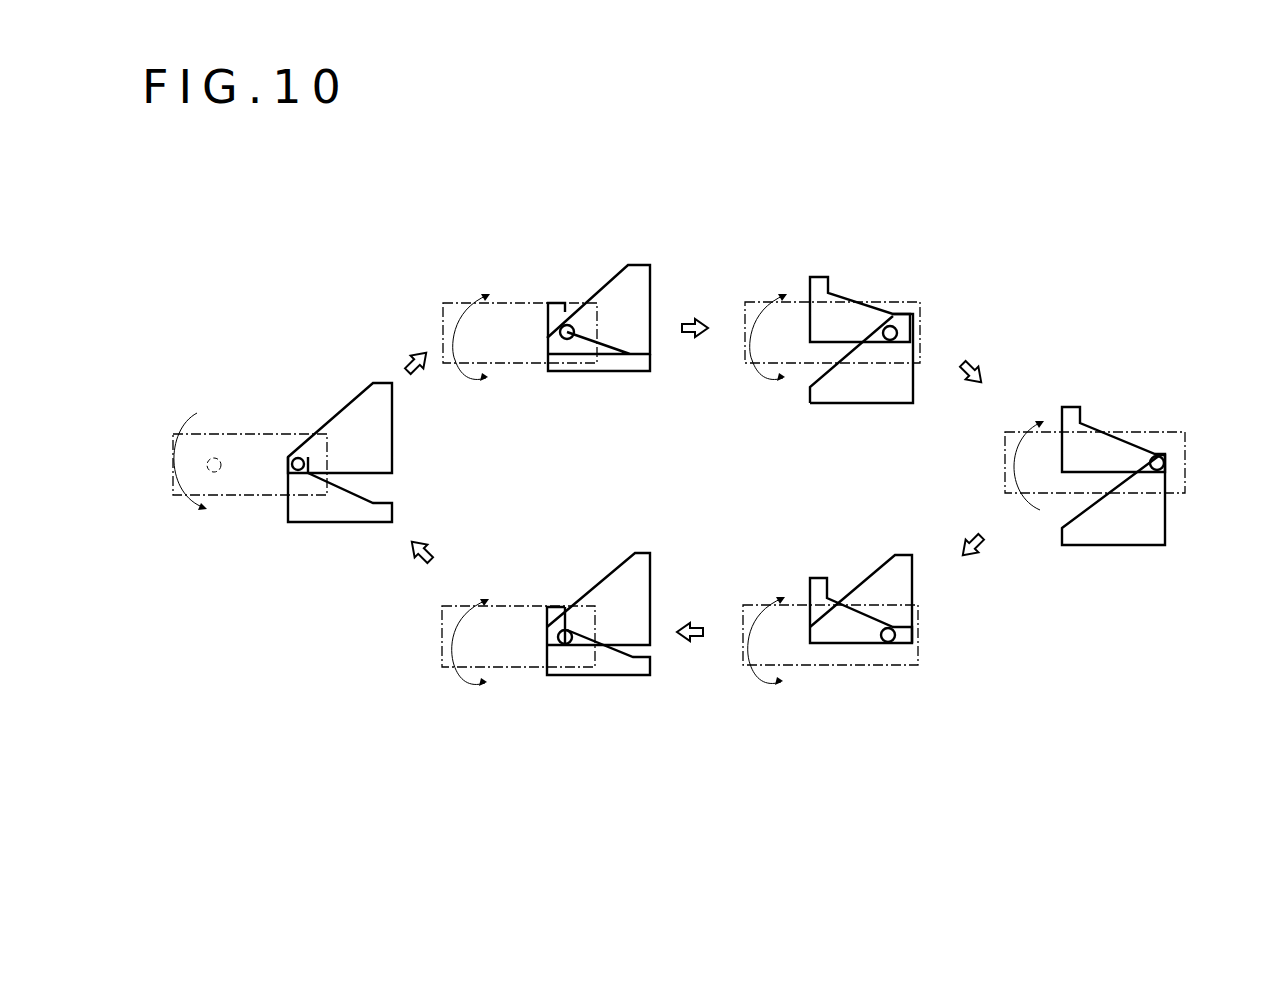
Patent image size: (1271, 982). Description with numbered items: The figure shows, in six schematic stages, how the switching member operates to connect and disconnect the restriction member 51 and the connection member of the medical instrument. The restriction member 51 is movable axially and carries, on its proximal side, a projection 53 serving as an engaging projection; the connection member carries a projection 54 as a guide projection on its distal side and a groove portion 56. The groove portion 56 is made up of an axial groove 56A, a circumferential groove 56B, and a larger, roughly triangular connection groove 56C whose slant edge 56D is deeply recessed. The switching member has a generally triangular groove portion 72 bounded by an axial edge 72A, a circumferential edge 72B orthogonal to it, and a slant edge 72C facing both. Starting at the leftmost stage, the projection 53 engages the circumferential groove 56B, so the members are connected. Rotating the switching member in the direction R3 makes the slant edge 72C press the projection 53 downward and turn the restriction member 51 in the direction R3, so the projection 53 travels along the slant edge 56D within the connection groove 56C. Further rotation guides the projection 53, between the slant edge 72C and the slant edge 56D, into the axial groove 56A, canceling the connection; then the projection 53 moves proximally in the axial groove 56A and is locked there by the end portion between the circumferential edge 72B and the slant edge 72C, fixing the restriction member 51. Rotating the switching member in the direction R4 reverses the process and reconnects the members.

The restriction member 51 is at (262, 434).
The projection 53 is at (291, 464).
The projection 54 is at (214, 458).
The groove portion 56 is at (393, 561).
The axial groove 56A is at (390, 512).
The circumferential groove 56B is at (298, 476).
The connection groove 56C is at (290, 508).
The slant edge 56D is at (334, 492).
The groove portion 72 is at (277, 348).
The axial edge 72A is at (363, 471).
The circumferential edge 72B is at (390, 418).
The slant edge 72C is at (333, 422).
The direction R3 is at (480, 536).
The direction R4 is at (748, 461).